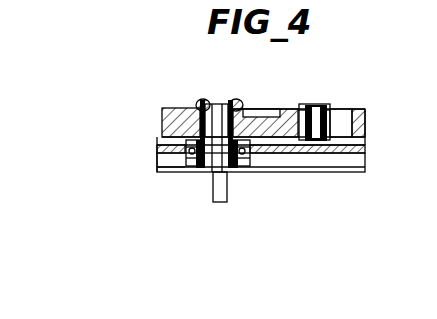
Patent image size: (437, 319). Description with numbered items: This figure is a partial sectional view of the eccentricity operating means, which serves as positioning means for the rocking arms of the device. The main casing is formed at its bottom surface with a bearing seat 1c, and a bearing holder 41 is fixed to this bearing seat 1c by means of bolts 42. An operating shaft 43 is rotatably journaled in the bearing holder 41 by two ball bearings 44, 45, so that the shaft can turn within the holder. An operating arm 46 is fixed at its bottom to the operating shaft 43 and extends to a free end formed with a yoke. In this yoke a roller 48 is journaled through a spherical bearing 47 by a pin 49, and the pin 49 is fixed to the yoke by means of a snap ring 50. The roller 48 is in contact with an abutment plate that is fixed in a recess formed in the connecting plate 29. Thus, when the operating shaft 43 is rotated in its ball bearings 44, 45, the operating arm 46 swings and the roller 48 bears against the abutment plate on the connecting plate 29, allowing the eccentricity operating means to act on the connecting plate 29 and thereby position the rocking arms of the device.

The bearing seat 1c is at (157, 164).
The connecting plate 29 is at (365, 112).
The bearing holder 41 is at (200, 105).
The bolts 42 is at (190, 170).
The operating shaft 43 is at (220, 203).
The ball bearing 44 is at (233, 170).
The ball bearing 45 is at (231, 103).
The operating arm 46 is at (272, 109).
The spherical bearing 47 is at (351, 160).
The roller 48 is at (332, 123).
The pin 49 is at (323, 158).
The snap ring 50 is at (300, 156).